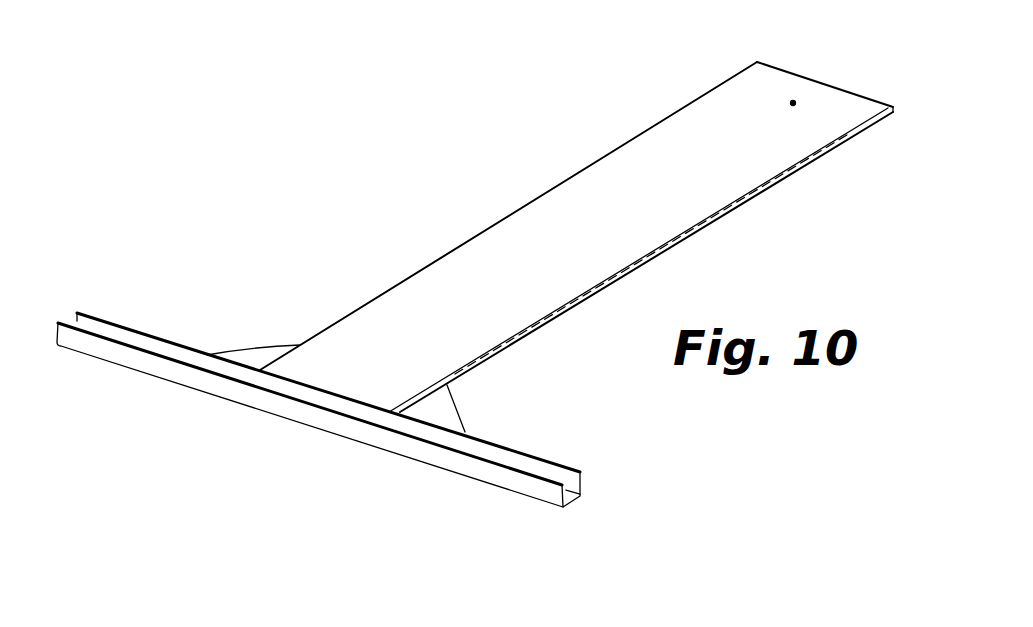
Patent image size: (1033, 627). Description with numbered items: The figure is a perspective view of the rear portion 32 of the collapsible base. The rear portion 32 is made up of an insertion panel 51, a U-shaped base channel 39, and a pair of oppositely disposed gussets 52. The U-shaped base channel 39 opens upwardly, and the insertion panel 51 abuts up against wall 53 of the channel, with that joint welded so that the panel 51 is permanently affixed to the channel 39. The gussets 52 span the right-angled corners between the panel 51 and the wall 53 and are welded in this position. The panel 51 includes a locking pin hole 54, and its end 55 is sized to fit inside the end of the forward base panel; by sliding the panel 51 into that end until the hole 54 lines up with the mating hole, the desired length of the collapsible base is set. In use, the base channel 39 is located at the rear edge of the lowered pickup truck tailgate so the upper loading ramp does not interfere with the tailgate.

The rear portion 32 is at (550, 229).
The U-shaped base channel 39 is at (325, 422).
The insertion panel 51 is at (683, 212).
The gussets 52 is at (257, 357).
The wall 53 is at (543, 456).
The locking pin hole 54 is at (790, 101).
The end 55 is at (798, 74).